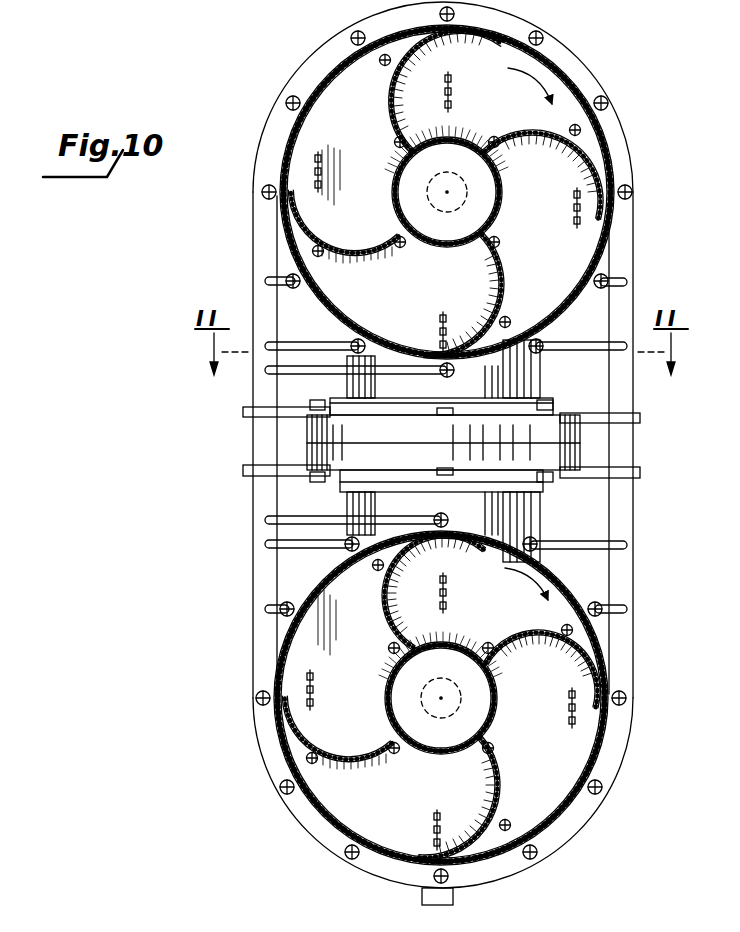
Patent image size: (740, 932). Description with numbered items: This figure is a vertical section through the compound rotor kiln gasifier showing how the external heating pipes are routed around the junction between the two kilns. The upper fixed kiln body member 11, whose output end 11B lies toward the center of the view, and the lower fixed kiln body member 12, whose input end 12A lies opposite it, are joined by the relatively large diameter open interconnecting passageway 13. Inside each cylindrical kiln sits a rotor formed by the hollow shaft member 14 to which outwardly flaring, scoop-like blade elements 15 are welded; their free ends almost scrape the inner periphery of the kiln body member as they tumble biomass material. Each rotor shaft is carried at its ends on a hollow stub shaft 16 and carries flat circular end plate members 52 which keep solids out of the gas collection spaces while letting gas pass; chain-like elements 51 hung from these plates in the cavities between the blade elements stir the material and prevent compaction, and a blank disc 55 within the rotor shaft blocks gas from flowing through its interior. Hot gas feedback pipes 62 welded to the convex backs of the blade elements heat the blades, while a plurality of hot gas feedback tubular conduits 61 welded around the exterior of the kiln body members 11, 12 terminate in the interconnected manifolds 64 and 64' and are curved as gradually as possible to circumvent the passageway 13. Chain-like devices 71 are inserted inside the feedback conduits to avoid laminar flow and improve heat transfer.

The kiln body member 11 is at (330, 301).
The output end 11B is at (332, 78).
The kiln body member 12 is at (309, 601).
The input end 12A is at (309, 810).
The interconnecting passageway 13 is at (540, 512).
The hollow shaft member 14 is at (394, 182).
The scoop-like blade elements 15 is at (391, 123).
The hollow stub shaft 16 is at (462, 193).
The chain-like elements 51 is at (450, 88).
The end plate members 52 is at (371, 107).
The blank disc 55 is at (400, 210).
The hot gas feedback tubular conduits 61 is at (528, 30).
The hot gas feedback pipes 62 is at (491, 136).
The manifold 64 is at (422, 350).
The manifold 64' is at (445, 801).
The chain-like devices 71 is at (607, 103).